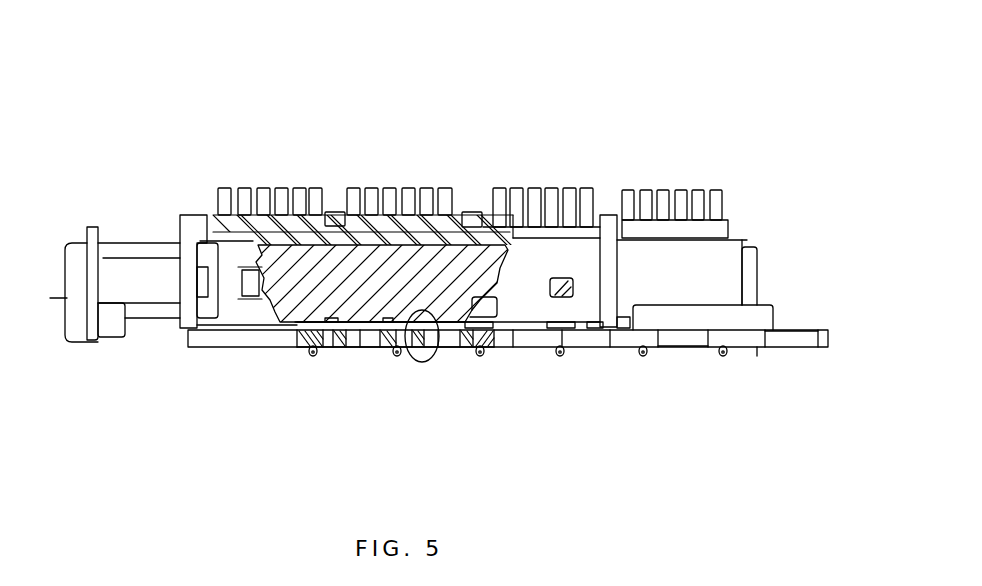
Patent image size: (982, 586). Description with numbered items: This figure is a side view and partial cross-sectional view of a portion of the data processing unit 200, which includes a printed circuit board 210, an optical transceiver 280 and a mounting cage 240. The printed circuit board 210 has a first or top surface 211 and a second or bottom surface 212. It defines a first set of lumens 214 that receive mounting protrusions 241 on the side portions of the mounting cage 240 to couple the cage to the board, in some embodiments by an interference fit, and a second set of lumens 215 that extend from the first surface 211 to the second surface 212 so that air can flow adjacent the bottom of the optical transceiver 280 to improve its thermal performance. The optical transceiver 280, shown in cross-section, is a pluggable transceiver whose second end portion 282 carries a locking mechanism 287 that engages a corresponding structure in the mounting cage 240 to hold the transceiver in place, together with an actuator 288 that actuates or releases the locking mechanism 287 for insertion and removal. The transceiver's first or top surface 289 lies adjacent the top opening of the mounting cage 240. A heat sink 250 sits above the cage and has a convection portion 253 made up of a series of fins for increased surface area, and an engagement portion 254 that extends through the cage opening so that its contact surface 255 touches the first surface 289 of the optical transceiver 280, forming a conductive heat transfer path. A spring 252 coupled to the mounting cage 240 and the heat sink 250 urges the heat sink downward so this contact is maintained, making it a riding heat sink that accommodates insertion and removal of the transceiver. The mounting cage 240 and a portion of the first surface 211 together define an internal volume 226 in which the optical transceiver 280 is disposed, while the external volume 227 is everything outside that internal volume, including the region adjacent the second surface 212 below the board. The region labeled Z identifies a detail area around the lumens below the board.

The data processing unit 200 is at (222, 42).
The actuator 288 is at (85, 227).
The second end portion 282 is at (121, 238).
The locking mechanism 287 is at (147, 295).
The optical transceiver 280 is at (143, 272).
The contact surface 255 is at (313, 232).
The engagement portion 254 is at (344, 245).
The first surface 289 is at (385, 250).
The convection portion 253 is at (568, 205).
The heat sink 250 is at (650, 163).
The mounting cage 240 is at (708, 259).
The first surface 211 is at (792, 332).
The printed circuit board 210 is at (772, 343).
The second surface 212 is at (683, 350).
The second set of lumens 215 is at (337, 345).
The internal volume 226 is at (327, 348).
The first set of lumens 214 is at (310, 347).
The mounting protrusions 241 is at (556, 352).
The spring 252 is at (587, 290).
The detail region Z is at (400, 367).
The external volume 227 is at (325, 493).